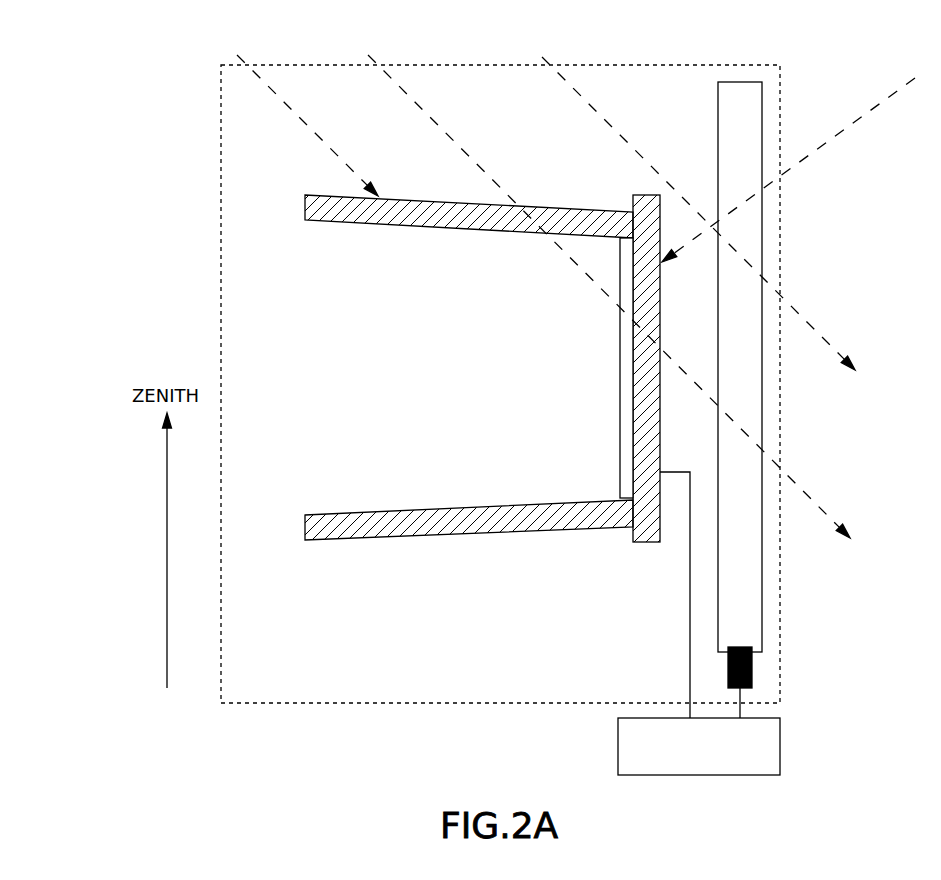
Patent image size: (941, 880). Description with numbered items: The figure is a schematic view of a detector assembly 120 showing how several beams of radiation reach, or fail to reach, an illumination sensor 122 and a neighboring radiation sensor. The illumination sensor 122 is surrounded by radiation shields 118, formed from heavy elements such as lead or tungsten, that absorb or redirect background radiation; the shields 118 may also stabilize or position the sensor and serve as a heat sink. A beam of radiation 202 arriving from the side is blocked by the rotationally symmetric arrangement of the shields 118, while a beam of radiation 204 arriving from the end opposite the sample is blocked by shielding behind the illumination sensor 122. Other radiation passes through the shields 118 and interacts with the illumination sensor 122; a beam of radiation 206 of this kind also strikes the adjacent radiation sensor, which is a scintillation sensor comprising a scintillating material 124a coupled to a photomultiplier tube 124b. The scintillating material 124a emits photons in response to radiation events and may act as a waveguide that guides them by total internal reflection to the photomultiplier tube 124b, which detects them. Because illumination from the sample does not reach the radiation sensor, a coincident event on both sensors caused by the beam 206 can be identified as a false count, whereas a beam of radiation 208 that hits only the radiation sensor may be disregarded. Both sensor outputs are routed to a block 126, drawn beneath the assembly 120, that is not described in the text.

The radiation shield 118 is at (334, 222).
The detector assembly 120 is at (262, 694).
The illumination sensor 122 is at (620, 378).
The scintillating material 124a is at (762, 615).
The photomultiplier tube 124b is at (752, 672).
The controller 126 is at (716, 759).
The beam of radiation 202 is at (259, 79).
The beam of radiation 204 is at (890, 94).
The beam of radiation 206 is at (389, 79).
The beam of radiation 208 is at (562, 79).